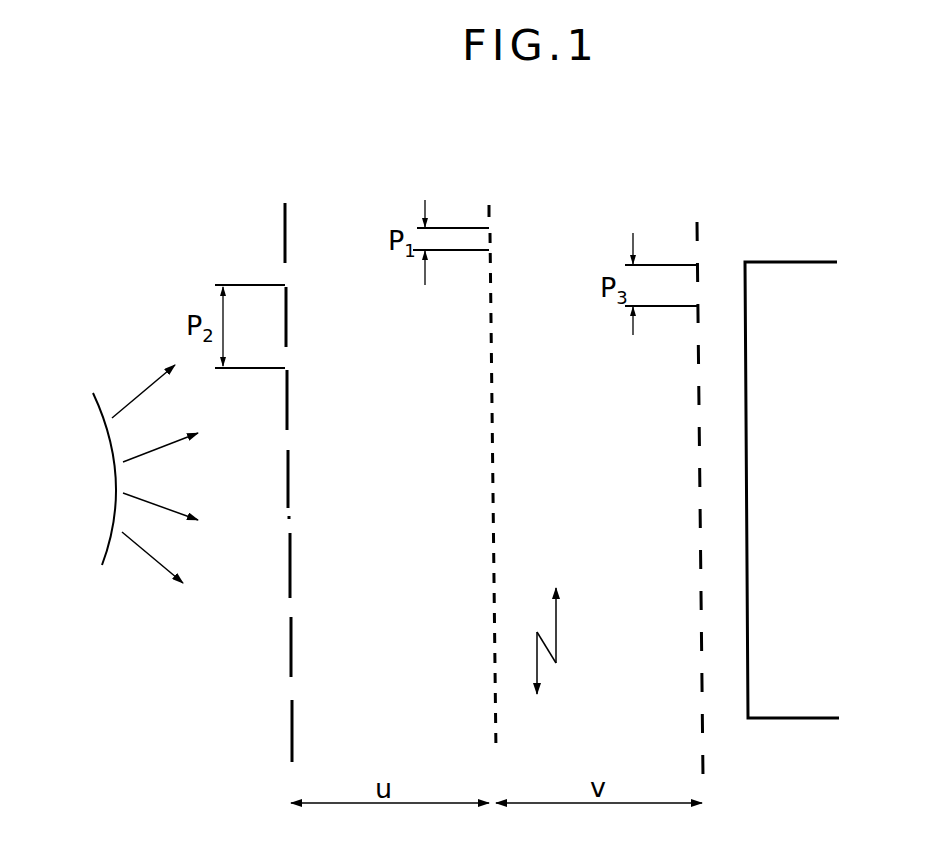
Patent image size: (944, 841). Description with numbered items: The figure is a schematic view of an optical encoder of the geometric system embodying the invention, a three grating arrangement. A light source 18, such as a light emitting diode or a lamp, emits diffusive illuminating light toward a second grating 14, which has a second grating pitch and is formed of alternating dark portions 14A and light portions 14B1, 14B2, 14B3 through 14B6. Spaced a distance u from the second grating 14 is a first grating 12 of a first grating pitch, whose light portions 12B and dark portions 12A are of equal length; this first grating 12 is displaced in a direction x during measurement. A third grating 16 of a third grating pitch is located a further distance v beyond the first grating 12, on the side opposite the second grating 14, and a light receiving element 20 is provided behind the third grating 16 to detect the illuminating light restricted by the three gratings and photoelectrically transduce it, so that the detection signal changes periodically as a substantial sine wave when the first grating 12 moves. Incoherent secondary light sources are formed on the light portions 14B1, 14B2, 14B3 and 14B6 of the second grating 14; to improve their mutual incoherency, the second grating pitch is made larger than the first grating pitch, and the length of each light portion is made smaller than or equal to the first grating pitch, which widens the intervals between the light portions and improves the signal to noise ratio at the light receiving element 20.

The first grating 12 is at (490, 215).
The dark portion 12A is at (490, 231).
The light portion 12B is at (490, 252).
The second grating 14 is at (285, 233).
The dark portion 14A is at (286, 318).
The light portion 14B1 is at (288, 278).
The light portion 14B2 is at (288, 357).
The light portion 14B3 is at (287, 443).
The light portion 14B6 is at (299, 688).
The third grating 16 is at (698, 235).
The light source 18 is at (110, 545).
The light receiving element 20 is at (777, 262).